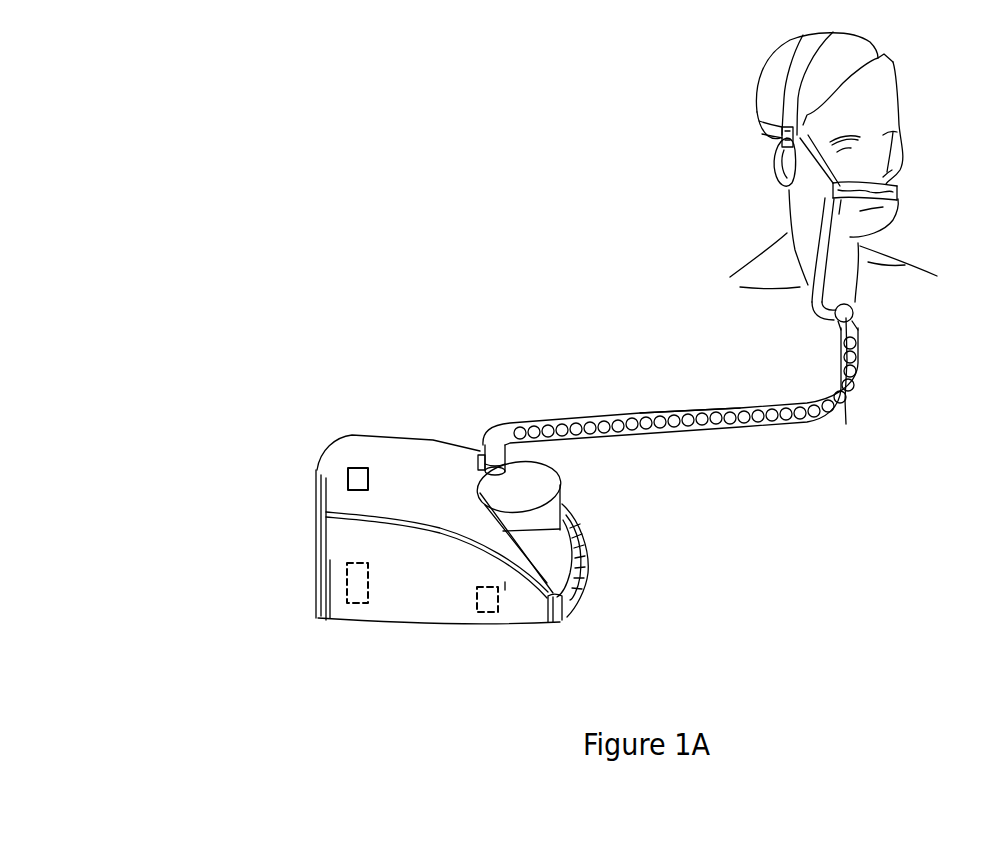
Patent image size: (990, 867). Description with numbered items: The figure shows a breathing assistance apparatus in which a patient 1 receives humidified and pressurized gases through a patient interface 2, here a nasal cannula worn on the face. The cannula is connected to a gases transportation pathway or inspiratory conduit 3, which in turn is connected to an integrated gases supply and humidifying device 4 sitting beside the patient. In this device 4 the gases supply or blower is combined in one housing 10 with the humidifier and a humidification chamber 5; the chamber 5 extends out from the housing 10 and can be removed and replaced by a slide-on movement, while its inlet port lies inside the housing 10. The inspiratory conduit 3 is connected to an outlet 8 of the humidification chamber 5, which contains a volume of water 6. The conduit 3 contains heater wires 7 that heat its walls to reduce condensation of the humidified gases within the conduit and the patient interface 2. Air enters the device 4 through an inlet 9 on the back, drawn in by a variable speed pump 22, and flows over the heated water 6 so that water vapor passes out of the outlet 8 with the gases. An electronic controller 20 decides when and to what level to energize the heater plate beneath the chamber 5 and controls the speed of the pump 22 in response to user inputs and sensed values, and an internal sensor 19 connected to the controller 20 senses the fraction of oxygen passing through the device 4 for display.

The patient 1 is at (810, 198).
The patient interface 2 is at (900, 190).
The inspiratory conduit 3 is at (740, 428).
The integrated gases supply and humidifying device 4 is at (383, 392).
The humidification chamber 5 is at (540, 478).
The water 6 is at (548, 550).
The heater wires 7 is at (675, 412).
The outlet 8 is at (488, 445).
The inlet 9 is at (317, 557).
The housing 10 is at (410, 603).
The internal sensor 19 is at (343, 600).
The controller 20 is at (347, 465).
The variable speed pump 22 is at (500, 600).